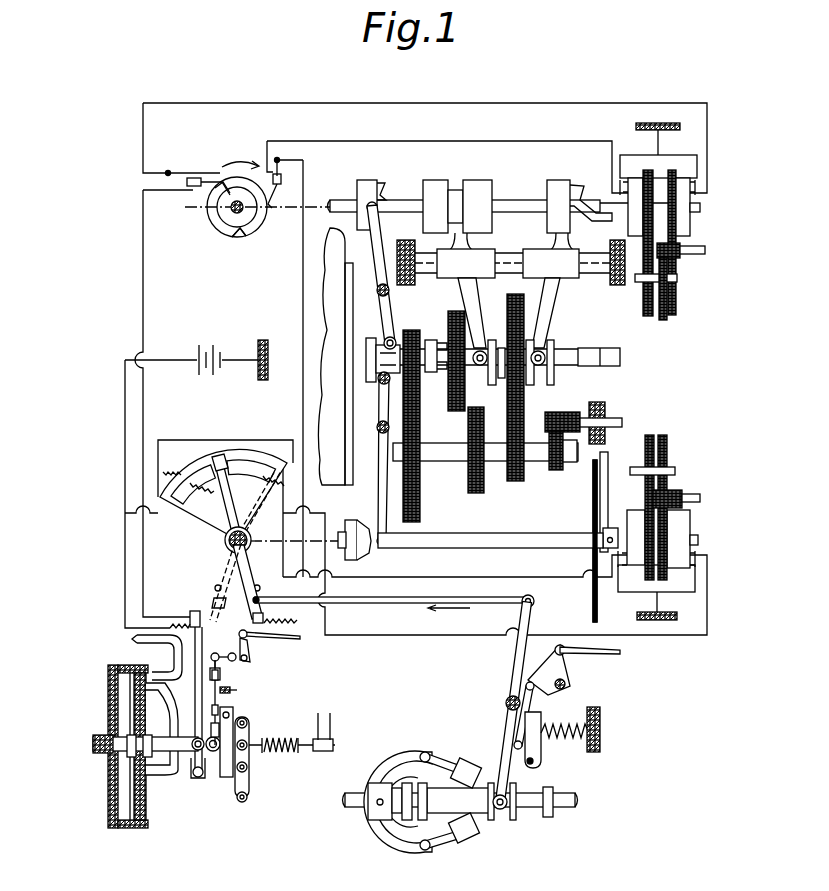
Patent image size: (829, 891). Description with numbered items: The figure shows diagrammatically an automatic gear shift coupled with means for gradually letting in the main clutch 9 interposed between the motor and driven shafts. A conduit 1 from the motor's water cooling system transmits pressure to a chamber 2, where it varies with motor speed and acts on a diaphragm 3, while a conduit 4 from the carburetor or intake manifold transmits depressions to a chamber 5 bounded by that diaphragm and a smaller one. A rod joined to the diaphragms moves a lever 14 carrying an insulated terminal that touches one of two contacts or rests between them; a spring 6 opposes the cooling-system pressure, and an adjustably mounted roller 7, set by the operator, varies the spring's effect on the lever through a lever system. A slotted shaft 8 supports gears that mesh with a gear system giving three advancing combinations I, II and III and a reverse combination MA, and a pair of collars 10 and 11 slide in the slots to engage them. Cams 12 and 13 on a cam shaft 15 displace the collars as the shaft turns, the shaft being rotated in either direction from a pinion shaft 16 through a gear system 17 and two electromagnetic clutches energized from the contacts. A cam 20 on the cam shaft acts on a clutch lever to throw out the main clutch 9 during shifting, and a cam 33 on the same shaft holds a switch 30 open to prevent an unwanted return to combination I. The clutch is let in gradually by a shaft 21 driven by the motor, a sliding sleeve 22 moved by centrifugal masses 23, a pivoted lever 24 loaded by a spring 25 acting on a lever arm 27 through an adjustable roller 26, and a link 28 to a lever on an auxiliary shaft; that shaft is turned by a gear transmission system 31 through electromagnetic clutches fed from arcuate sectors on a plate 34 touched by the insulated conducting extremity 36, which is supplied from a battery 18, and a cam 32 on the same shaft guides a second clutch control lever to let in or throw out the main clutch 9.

The conduit 1 is at (108, 690).
The chamber 2 is at (118, 800).
The diaphragm 3 is at (131, 800).
The conduit 4 is at (178, 688).
The chamber 5 is at (141, 787).
The spring 6 is at (282, 750).
The adjustably mounted roller 7 is at (237, 735).
The shaft 8 is at (603, 354).
The main clutch 9 is at (366, 345).
The collar 10 is at (553, 346).
The collar 11 is at (460, 345).
The cam 12 is at (563, 180).
The cam 13 is at (470, 182).
The lever 14 is at (203, 703).
The cam shaft 15 is at (232, 210).
The shaft 16 is at (683, 250).
The system of gears 17 is at (661, 304).
The battery 18 is at (213, 350).
The cam 20 is at (365, 185).
The shaft 21 is at (531, 804).
The sleeve 22 is at (460, 828).
The centrifugal masses 23 is at (470, 764).
The lever 24 is at (518, 664).
The spring 25 is at (570, 723).
The roller 26 is at (536, 757).
The lever arm 27 is at (535, 742).
The link 28 is at (387, 602).
The switch 30 is at (196, 178).
The gear transmission system 31 is at (664, 453).
The cam 32 is at (350, 520).
The cam 33 is at (228, 189).
The plate 34 is at (240, 452).
The insulated conducting extremity 36 is at (217, 458).
The reverse gear combination MA is at (578, 452).
The first speed gear combination I is at (515, 397).
The second speed gear combination II is at (475, 459).
The third speed gear combination III is at (422, 426).